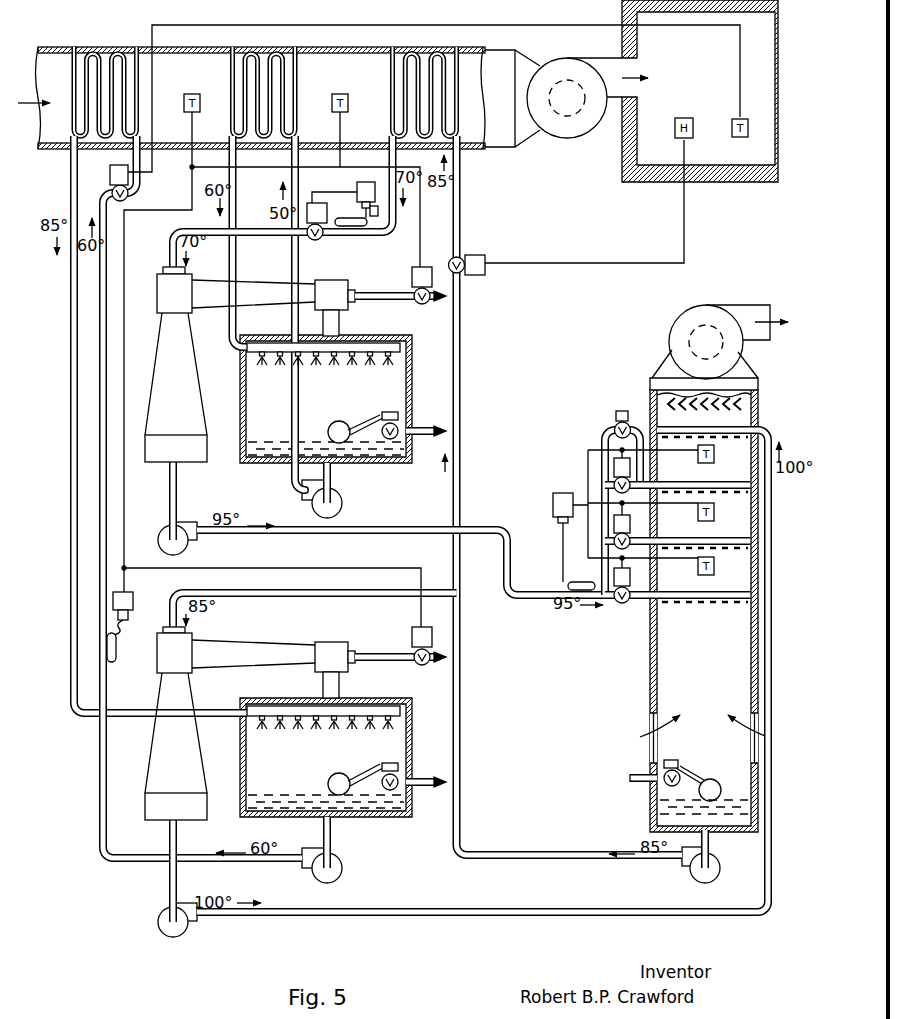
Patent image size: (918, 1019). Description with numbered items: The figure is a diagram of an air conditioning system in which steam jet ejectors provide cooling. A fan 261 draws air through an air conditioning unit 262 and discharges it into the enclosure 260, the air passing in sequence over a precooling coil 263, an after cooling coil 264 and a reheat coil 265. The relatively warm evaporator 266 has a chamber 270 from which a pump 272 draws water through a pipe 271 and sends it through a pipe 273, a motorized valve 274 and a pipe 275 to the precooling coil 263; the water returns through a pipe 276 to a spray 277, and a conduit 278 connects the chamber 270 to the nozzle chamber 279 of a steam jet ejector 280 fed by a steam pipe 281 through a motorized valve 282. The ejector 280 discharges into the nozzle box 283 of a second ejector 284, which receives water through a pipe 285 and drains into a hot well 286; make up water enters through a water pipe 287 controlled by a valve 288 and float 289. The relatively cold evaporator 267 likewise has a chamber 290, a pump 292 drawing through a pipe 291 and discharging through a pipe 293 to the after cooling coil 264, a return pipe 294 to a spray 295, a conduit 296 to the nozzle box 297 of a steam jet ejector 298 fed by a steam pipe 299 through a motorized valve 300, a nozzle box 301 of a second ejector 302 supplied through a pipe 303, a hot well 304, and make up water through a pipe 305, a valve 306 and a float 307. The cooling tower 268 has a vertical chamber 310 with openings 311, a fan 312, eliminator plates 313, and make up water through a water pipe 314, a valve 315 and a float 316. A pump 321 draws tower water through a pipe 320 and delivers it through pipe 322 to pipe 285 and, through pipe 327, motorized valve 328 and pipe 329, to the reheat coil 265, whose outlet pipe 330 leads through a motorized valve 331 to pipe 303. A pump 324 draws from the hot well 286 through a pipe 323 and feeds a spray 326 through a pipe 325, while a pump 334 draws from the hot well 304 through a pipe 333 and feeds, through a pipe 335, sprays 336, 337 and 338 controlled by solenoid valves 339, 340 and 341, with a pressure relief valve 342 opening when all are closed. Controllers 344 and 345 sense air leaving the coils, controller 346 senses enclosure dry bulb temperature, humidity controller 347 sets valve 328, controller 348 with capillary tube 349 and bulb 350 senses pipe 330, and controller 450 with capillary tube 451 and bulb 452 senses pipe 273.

The enclosure 260 is at (683, 65).
The fan 261 is at (573, 139).
The air conditioning unit 262 is at (487, 154).
The precooling coil 263 is at (72, 80).
The after cooling coil 264 is at (229, 74).
The reheat coil 265 is at (389, 74).
The relatively warm evaporator 266 is at (393, 838).
The relatively cold evaporator 267 is at (394, 475).
The cooling tower 268 is at (636, 676).
The evaporator chamber 270 is at (267, 817).
The pipe 271 is at (331, 840).
The pump 272 is at (339, 877).
The pipe 273 is at (216, 871).
The motorized valve 274 is at (110, 184).
The pipe 275 is at (130, 190).
The pipe 276 is at (69, 203).
The spray 277 is at (298, 700).
The conduit 278 is at (340, 686).
The nozzle chamber 279 is at (324, 644).
The steam jet ejector 280 is at (245, 650).
The steam pipe 281 is at (368, 657).
The motorized valve 282 is at (413, 626).
The nozzle box 283 is at (181, 645).
The second ejector 284 is at (165, 700).
The pipe 285 is at (281, 589).
The hot well 286 is at (145, 812).
The water pipe 287 is at (416, 779).
The valve 288 is at (380, 766).
The float 289 is at (330, 780).
The evaporator chamber 290 is at (412, 393).
The pipe 291 is at (330, 478).
The pump 292 is at (339, 509).
The pipe 293 is at (292, 478).
The pipe 294 is at (237, 202).
The spray 295 is at (372, 346).
The conduit 296 is at (340, 318).
The nozzle box 297 is at (326, 284).
The steam jet ejector 298 is at (251, 283).
The steam pipe 299 is at (362, 296).
The motorized valve 300 is at (411, 272).
The nozzle box 301 is at (157, 296).
The second ejector 302 is at (163, 354).
The pipe 303 is at (169, 253).
The hot well 304 is at (190, 465).
The pipe 305 is at (412, 430).
The valve 306 is at (386, 418).
The float 307 is at (335, 427).
The vertical chamber 310 is at (650, 644).
The openings 311 is at (648, 724).
The fan 312 is at (676, 327).
The eliminator plates 313 is at (724, 413).
The water pipe 314 is at (631, 784).
The valve 315 is at (688, 766).
The float 316 is at (716, 786).
The pipe 320 is at (709, 843).
The pump 321 is at (706, 875).
The pipe 322 is at (461, 814).
The pipe 323 is at (169, 893).
The pump 324 is at (180, 935).
The pipe 325 is at (383, 930).
The spray 326 is at (729, 434).
The pipe 327 is at (461, 461).
The motorized valve 328 is at (469, 276).
The pipe 329 is at (461, 213).
The pipe 330 is at (384, 233).
The motorized valve 331 is at (316, 205).
The pipe 333 is at (170, 499).
The pump 334 is at (179, 543).
The pipe 335 is at (281, 540).
The spray 336 is at (712, 605).
The spray 337 is at (729, 548).
The spray 338 is at (729, 493).
The solenoid valve 339 is at (630, 577).
The solenoid valve 340 is at (630, 524).
The solenoid valve 341 is at (614, 467).
The pressure relief valve 342 is at (614, 422).
The temperature responsive controller 344 is at (184, 100).
The temperature responsive controller 345 is at (349, 98).
The temperature responsive controller 346 is at (738, 118).
The humidity responsive controller 347 is at (683, 118).
The temperature responsive controller 348 is at (363, 184).
The capillary tube 349 is at (381, 217).
The bulb 350 is at (347, 212).
The temperature responsive controller 450 is at (128, 600).
The capillary tube 451 is at (118, 633).
The bulb 452 is at (116, 652).